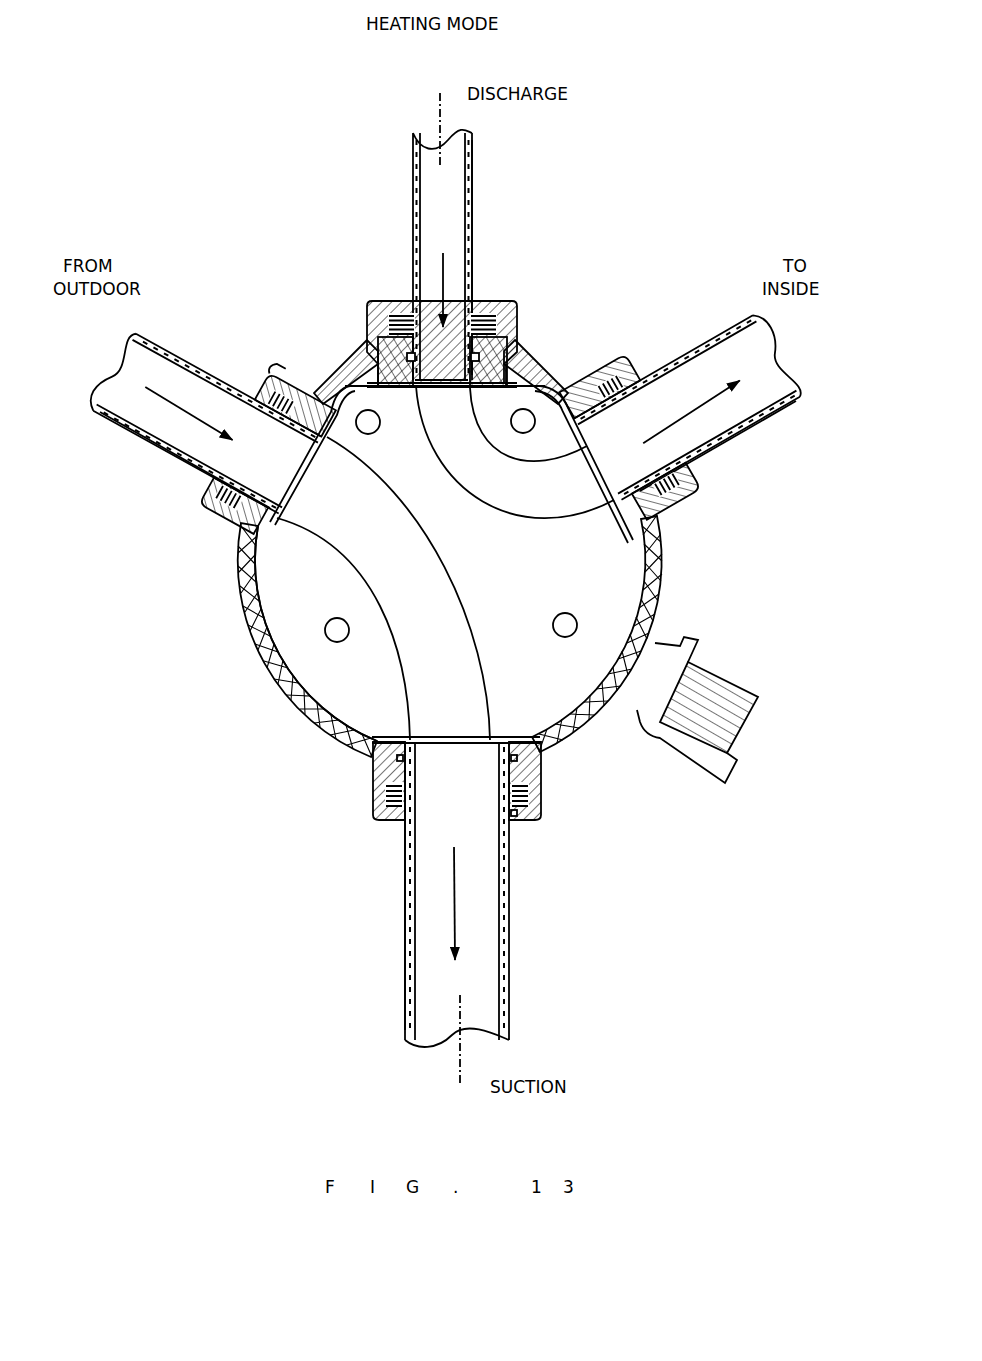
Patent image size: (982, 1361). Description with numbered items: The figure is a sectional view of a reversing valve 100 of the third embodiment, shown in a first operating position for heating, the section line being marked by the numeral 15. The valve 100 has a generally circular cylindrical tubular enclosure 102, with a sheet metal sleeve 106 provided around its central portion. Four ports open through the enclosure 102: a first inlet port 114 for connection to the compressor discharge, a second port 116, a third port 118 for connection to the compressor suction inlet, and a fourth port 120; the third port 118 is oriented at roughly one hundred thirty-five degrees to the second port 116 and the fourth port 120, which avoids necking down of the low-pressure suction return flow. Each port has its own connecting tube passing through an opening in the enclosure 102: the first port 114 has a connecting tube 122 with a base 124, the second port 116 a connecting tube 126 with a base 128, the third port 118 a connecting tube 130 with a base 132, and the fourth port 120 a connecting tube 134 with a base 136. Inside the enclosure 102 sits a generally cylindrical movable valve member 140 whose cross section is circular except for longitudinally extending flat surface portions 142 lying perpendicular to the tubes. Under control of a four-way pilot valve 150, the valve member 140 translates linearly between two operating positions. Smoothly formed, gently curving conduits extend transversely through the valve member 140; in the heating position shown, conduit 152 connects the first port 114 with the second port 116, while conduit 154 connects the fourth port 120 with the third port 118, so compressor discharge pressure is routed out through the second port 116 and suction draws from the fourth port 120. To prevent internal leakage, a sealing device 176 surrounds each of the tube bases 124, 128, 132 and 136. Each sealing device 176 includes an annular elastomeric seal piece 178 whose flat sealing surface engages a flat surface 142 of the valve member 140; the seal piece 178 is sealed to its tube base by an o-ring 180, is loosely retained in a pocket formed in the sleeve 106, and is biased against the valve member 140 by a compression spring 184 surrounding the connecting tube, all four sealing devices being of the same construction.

The section line 15- 15 is at (440, 92).
The reversing valve 100 is at (303, 747).
The tubular enclosure 102 is at (250, 640).
The sheet metal sleeve 106 is at (263, 665).
The first inlet port 114 is at (401, 255).
The second port 116 is at (750, 447).
The third port 118 is at (388, 877).
The fourth port 120 is at (170, 471).
The connecting tube 122 is at (473, 192).
The base 124 is at (493, 312).
The connecting tube 126 is at (712, 457).
The base 128 is at (642, 553).
The connecting tube 130 is at (407, 953).
The base 132 is at (522, 780).
The connecting tube 134 is at (148, 443).
The base 136 is at (298, 375).
The movable valve member 140 is at (332, 678).
The flat surface portions 142 is at (578, 334).
The four-way pilot valve 150 is at (735, 672).
The curved conduit 152 is at (566, 516).
The curved conduit 154 is at (447, 569).
The sealing device 176 is at (507, 248).
The seal piece 178 is at (392, 322).
The o-ring 180 is at (388, 778).
The compression spring 184 is at (520, 817).